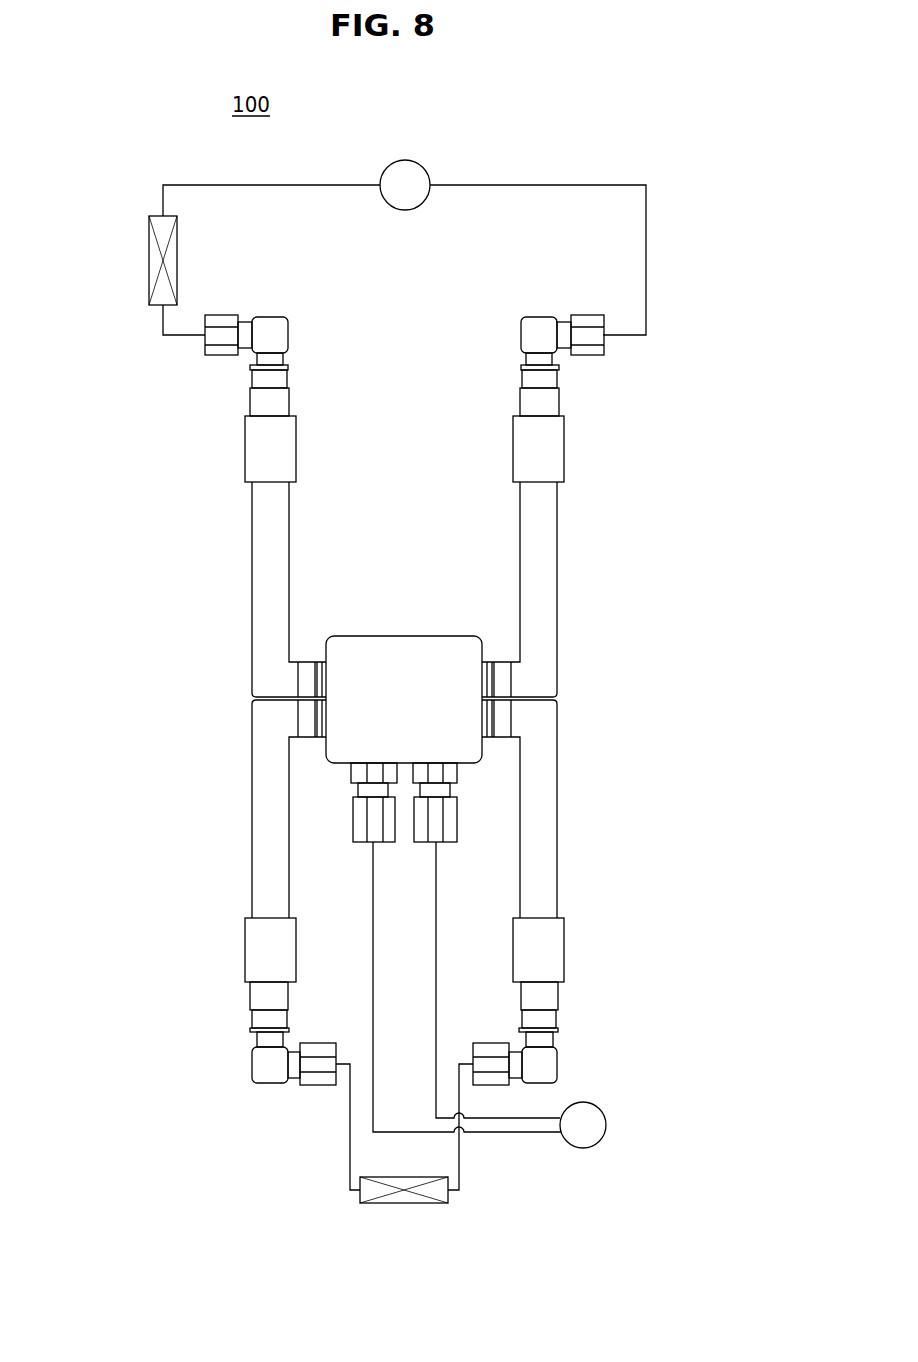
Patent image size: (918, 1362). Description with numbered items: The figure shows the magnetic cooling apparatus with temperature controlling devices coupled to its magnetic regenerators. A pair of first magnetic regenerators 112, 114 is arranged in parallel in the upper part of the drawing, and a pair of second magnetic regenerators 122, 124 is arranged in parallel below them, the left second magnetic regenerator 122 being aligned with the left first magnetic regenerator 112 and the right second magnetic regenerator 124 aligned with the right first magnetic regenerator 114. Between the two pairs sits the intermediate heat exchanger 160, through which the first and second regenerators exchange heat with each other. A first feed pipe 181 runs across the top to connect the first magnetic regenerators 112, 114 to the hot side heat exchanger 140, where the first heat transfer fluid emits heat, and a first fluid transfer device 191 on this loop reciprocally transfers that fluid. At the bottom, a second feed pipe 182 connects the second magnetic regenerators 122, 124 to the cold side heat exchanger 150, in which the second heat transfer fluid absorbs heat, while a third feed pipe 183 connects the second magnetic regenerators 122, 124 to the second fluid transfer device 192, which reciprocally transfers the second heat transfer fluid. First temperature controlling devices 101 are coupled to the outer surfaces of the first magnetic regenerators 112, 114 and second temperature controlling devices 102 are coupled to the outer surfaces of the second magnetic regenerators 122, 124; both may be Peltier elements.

The first temperature controlling device 101 is at (270, 443).
The second temperature controlling device 102 is at (526, 937).
The first magnetic regenerator 112 is at (242, 548).
The first magnetic regenerator 114 is at (568, 548).
The second magnetic regenerator 122 is at (242, 815).
The second magnetic regenerator 124 is at (568, 816).
The hot side heat exchanger 140 is at (146, 257).
The cold side heat exchanger 150 is at (406, 1208).
The intermediate heat exchanger 160 is at (410, 631).
The first feed pipe 181 is at (517, 185).
The second feed pipe 182 is at (350, 1138).
The third feed pipe 183 is at (437, 885).
The first fluid transfer device 191 is at (408, 159).
The second fluid transfer device 192 is at (608, 1108).